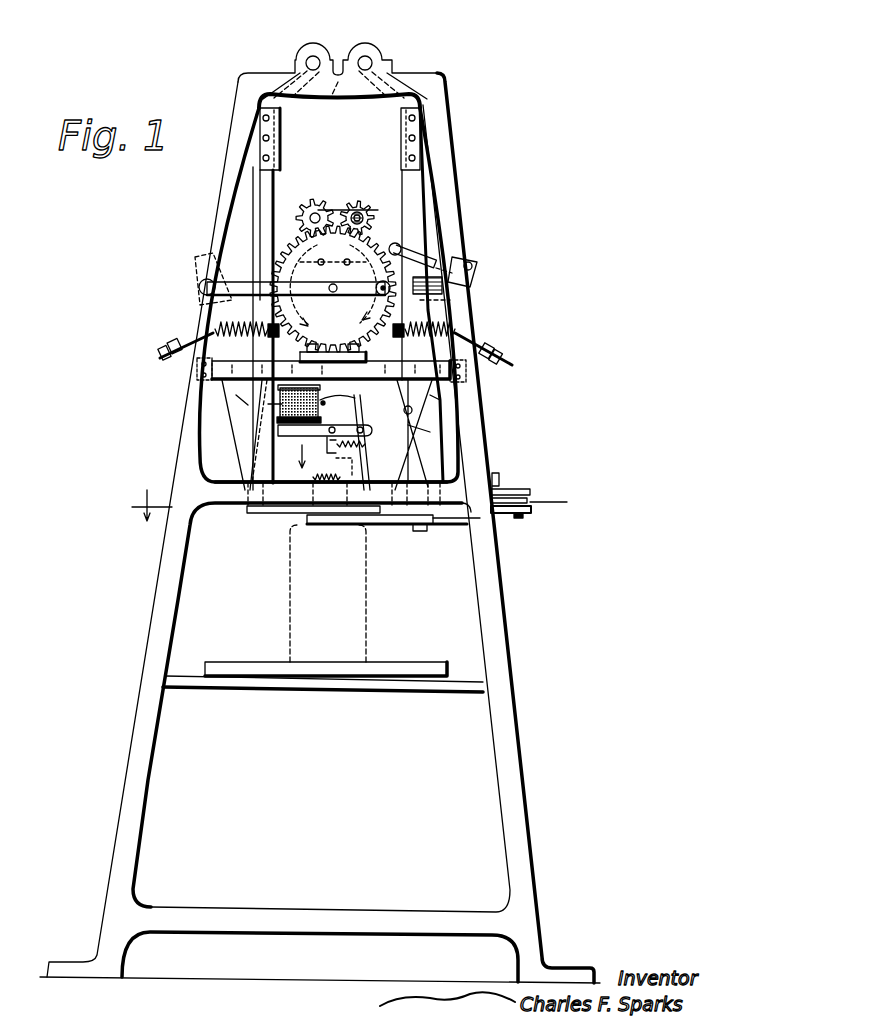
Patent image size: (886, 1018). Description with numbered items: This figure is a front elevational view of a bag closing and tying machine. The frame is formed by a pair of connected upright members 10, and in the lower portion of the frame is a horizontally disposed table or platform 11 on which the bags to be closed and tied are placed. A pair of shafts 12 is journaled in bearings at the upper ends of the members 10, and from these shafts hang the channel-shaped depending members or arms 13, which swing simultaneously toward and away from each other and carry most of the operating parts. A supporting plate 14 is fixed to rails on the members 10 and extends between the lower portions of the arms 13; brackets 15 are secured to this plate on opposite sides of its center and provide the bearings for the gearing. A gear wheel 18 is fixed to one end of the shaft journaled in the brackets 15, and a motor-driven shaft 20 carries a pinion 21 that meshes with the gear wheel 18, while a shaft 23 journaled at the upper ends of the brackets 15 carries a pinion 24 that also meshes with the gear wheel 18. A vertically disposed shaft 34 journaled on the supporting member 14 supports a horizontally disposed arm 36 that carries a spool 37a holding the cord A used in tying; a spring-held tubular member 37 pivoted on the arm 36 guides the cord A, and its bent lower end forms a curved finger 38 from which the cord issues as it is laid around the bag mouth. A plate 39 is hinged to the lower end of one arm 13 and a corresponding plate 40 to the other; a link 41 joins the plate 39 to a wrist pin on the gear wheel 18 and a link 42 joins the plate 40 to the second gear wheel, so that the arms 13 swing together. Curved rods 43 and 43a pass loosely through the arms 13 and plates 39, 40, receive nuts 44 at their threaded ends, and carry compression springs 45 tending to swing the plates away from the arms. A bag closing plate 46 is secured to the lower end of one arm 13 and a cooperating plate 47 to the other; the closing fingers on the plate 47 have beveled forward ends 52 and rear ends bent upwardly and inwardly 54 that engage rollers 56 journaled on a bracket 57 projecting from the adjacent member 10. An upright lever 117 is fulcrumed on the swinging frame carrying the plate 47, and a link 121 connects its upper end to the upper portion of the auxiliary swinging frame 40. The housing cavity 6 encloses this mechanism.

The housing cavity 6 is at (282, 451).
The upright members 10 is at (158, 631).
The table or platform 11 is at (396, 668).
The shafts 12 is at (362, 56).
The depending members (arms) 13 is at (408, 178).
The supporting plate 14 is at (331, 371).
The brackets 15 is at (352, 504).
The gear wheel 18 is at (303, 250).
The shaft 20 is at (366, 216).
The pinion 21 is at (361, 208).
The shaft 23 is at (322, 210).
The pinion 24 is at (313, 212).
The vertically disposed shaft 34 is at (351, 395).
The horizontally disposed arm 36 is at (292, 436).
The spring-held tubular member 37 is at (362, 450).
The spool 37a is at (280, 405).
The curved finger 38 is at (333, 469).
The plate 39 is at (232, 394).
The plate (auxiliary swinging frame) 40 is at (433, 396).
The link 41 is at (247, 283).
The link 42 is at (430, 302).
The curved rod 43 is at (156, 352).
The curved rod 43a is at (512, 367).
The nuts 44 is at (175, 345).
The compression springs 45 is at (243, 327).
The bag closing plate 46 is at (264, 514).
The plate 47 is at (389, 527).
The beveled forward ends 52 is at (337, 527).
The upwardly and inwardly bent rear ends 54 is at (528, 513).
The rollers 56 is at (527, 498).
The bracket 57 is at (500, 490).
The upright lever 117 is at (435, 432).
The link 121 is at (427, 255).
The cord A is at (325, 404).